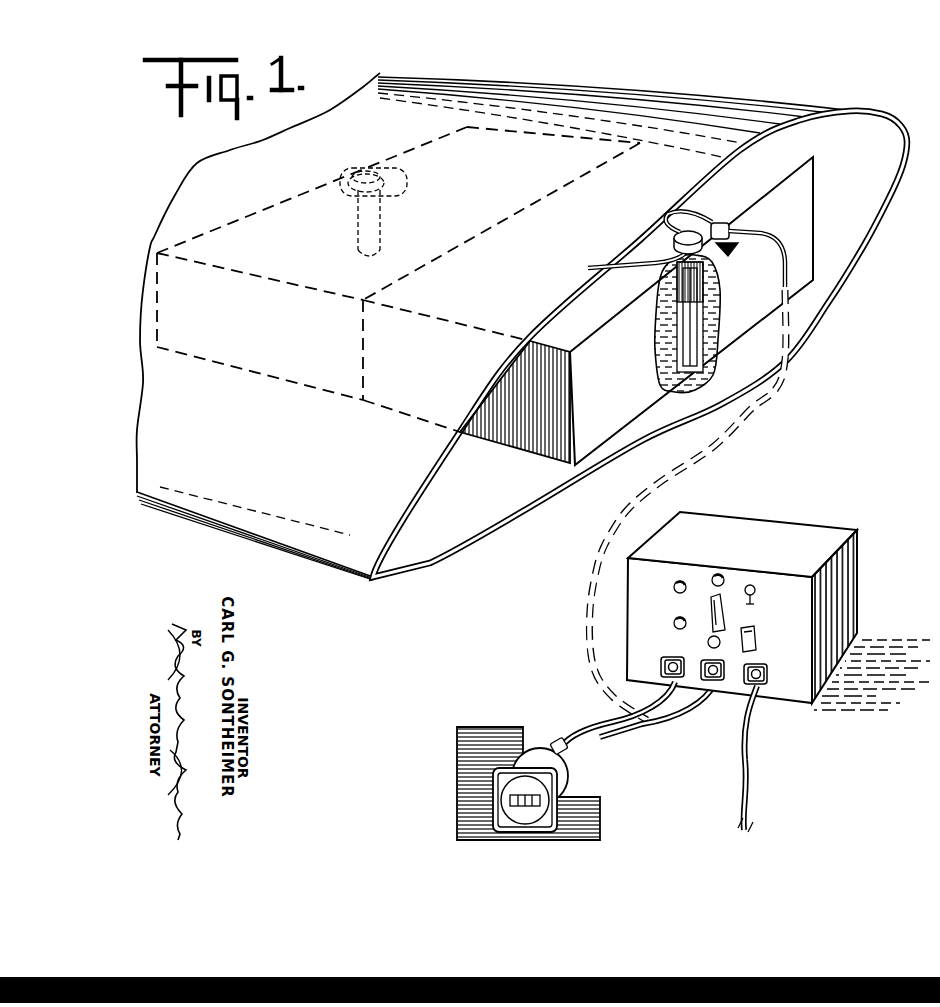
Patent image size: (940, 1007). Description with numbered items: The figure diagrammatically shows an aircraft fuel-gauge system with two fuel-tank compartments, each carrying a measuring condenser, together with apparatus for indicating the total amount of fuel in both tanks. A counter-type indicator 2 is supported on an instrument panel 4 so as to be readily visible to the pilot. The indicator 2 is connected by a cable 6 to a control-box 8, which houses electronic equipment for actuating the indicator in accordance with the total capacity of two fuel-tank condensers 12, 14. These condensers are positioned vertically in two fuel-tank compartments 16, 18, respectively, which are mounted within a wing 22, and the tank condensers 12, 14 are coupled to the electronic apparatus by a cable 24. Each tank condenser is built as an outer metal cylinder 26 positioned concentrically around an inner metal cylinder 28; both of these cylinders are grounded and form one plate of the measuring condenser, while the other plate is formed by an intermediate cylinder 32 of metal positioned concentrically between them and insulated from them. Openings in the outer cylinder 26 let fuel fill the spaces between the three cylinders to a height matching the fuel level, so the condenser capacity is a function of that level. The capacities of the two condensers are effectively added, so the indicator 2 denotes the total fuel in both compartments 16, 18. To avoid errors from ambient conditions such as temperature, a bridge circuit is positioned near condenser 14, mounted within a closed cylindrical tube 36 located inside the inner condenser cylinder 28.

The counter-type indicator 2 is at (574, 779).
The instrument panel 4 is at (470, 752).
The cable 6 is at (660, 682).
The control-box 8 is at (795, 540).
The fuel-tank condenser 12 is at (357, 239).
The fuel-tank condenser 14 is at (670, 343).
The fuel-tank compartment 16 is at (235, 372).
The fuel-tank compartment 18 is at (532, 430).
The wing 22 is at (793, 122).
The cable 24 is at (754, 250).
The outer metal cylinder 26 is at (708, 294).
The inner metal cylinder 28 is at (704, 314).
The intermediate cylinder 32 is at (700, 327).
The closed cylindrical tube 36 is at (690, 292).